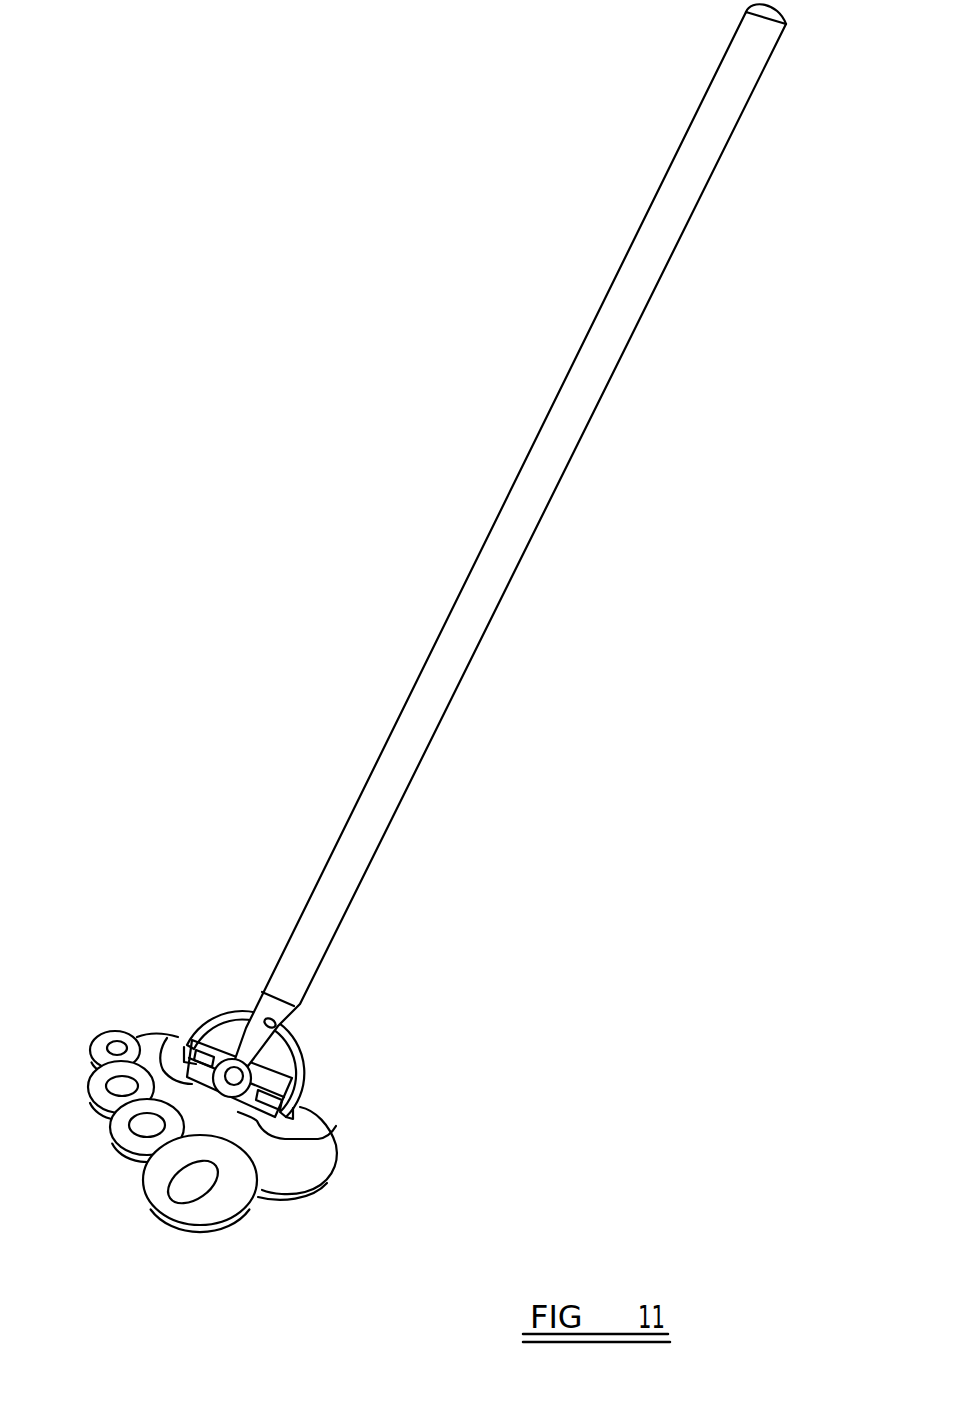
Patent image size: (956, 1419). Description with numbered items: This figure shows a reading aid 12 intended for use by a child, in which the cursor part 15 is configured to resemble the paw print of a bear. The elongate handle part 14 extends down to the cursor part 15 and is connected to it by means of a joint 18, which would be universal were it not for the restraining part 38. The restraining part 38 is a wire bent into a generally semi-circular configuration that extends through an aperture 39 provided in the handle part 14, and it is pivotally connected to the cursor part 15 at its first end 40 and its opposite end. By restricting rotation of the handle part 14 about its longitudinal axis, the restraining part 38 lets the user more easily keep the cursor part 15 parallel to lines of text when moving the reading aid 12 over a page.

The reading aid 12 is at (437, 645).
The handle part 14 is at (498, 578).
The cursor part 15 is at (303, 1171).
The joint 18 is at (233, 1112).
The restraining part 38 is at (305, 1058).
The aperture 39 is at (288, 1032).
The first end 40 is at (182, 1082).